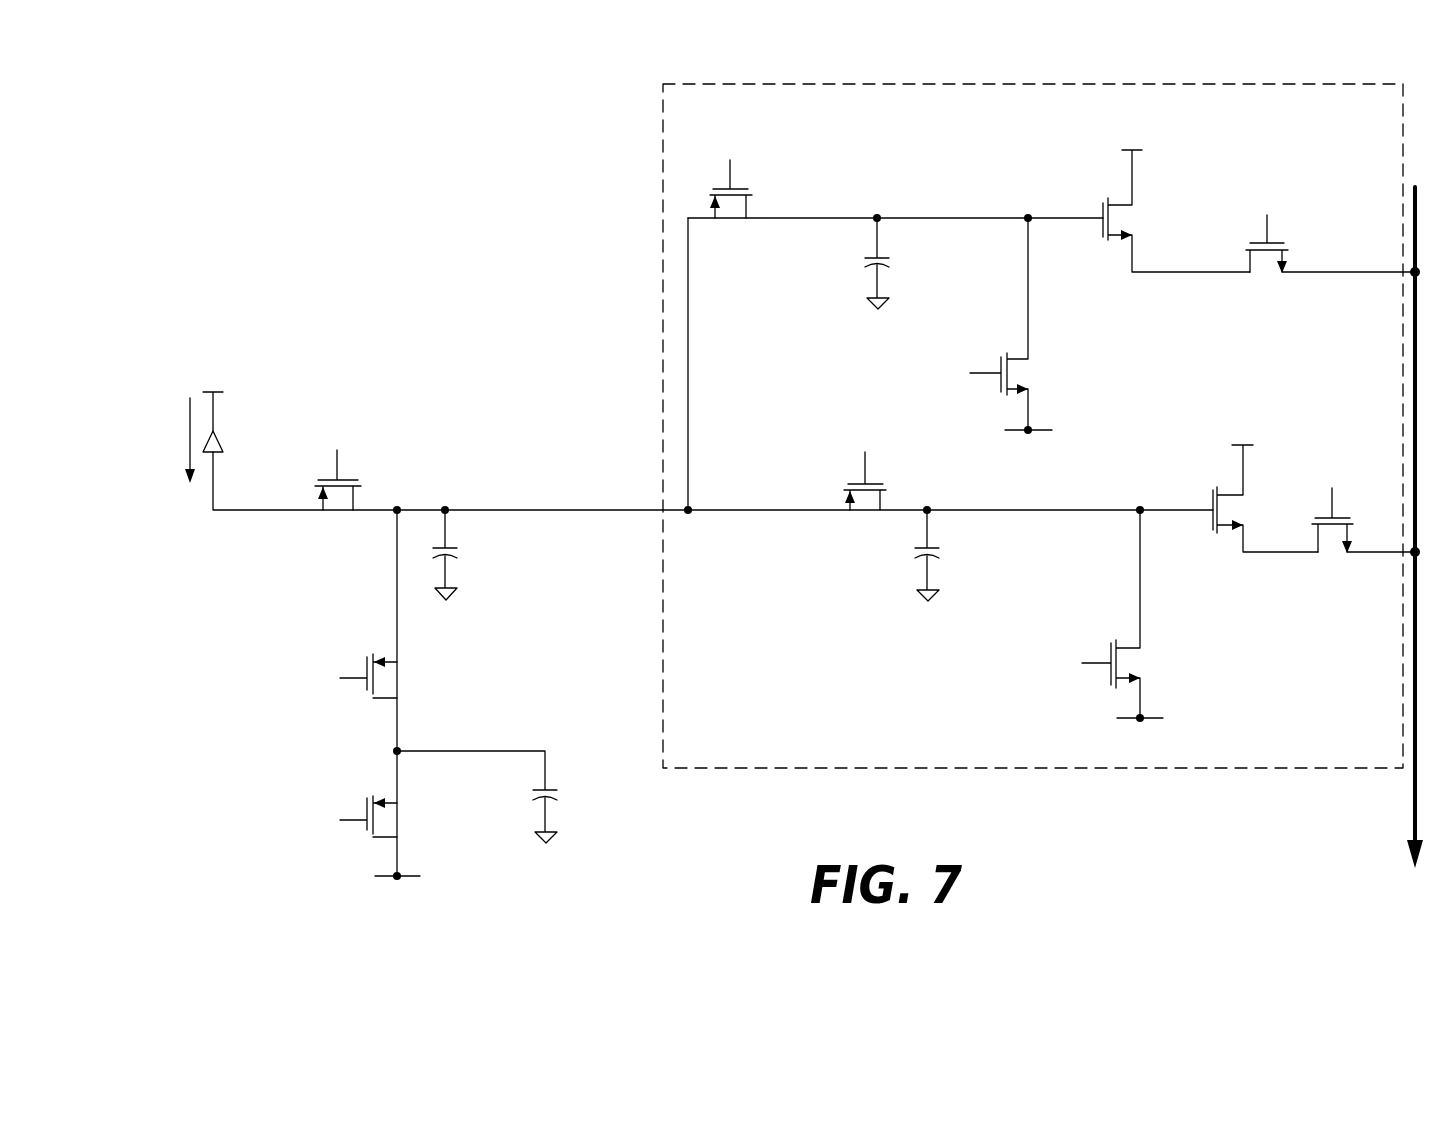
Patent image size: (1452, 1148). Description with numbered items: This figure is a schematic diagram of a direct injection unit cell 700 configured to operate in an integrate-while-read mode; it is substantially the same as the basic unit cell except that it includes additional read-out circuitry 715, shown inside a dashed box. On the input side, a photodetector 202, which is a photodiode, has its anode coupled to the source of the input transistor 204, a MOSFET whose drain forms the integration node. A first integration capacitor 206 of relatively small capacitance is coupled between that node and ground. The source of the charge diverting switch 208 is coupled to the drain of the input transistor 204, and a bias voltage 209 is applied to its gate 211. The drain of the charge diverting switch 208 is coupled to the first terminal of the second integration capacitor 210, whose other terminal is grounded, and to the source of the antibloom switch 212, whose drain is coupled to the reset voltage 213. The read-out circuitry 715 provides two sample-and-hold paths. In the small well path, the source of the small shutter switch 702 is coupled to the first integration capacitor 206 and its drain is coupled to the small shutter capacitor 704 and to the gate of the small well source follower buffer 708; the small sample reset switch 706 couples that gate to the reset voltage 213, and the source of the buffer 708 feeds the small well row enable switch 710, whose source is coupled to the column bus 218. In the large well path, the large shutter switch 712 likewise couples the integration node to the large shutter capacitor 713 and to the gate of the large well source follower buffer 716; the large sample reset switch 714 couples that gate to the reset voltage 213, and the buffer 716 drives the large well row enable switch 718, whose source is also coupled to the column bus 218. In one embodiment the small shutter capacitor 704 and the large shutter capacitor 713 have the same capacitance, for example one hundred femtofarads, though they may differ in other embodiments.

The unit cell circuit 700 is at (479, 223).
The photodetector 202 is at (219, 430).
The input transistor 204 is at (340, 479).
The first integration capacitor 206 is at (452, 554).
The charge diverting switch 208 is at (371, 656).
The bias voltage 209 is at (368, 520).
The second integration capacitor 210 is at (551, 790).
The gate 211 is at (356, 674).
The antibloom switch 212 is at (366, 805).
The reset voltage 213 is at (392, 876).
The column bus 218 is at (1410, 840).
The small shutter switch 702 is at (740, 190).
The small shutter capacitor 704 is at (870, 266).
The small sample reset switch 706 is at (1003, 359).
The small well source follower buffer 708 is at (1104, 203).
The small well row enable switch 710 is at (1247, 251).
The large shutter switch 712 is at (872, 484).
The large shutter capacitor 713 is at (935, 548).
The large sample reset switch 714 is at (1109, 646).
The read-out circuitry 715 is at (661, 166).
The large well source follower buffer 716 is at (1215, 496).
The large well row enable switch 718 is at (1327, 527).